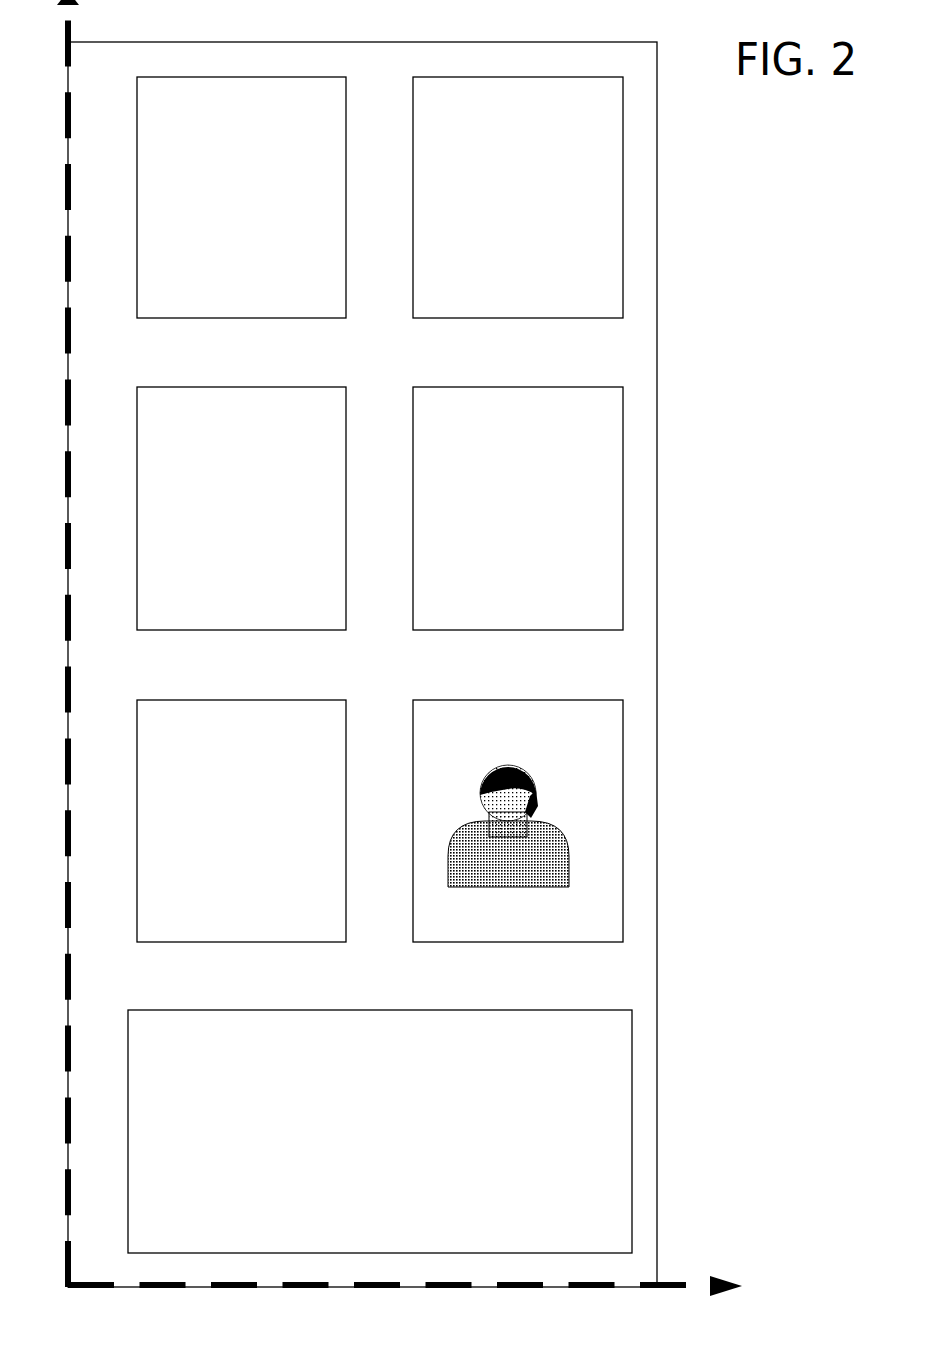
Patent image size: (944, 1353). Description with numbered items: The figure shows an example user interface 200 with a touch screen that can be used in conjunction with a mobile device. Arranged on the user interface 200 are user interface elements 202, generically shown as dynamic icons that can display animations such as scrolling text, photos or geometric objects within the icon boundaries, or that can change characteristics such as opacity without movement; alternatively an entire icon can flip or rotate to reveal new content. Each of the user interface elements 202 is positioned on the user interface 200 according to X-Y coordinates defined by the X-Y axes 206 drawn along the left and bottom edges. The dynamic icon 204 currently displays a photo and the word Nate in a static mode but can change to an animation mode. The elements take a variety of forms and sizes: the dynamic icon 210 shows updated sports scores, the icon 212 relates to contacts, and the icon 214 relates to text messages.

The user interface 200 is at (657, 596).
The user interface elements 202 is at (475, 665).
The dynamic icon 204 is at (623, 768).
The X-Y axes 206 is at (690, 1285).
The dynamic icon 210 is at (632, 1018).
The icon 212 is at (614, 455).
The icon 214 is at (614, 226).